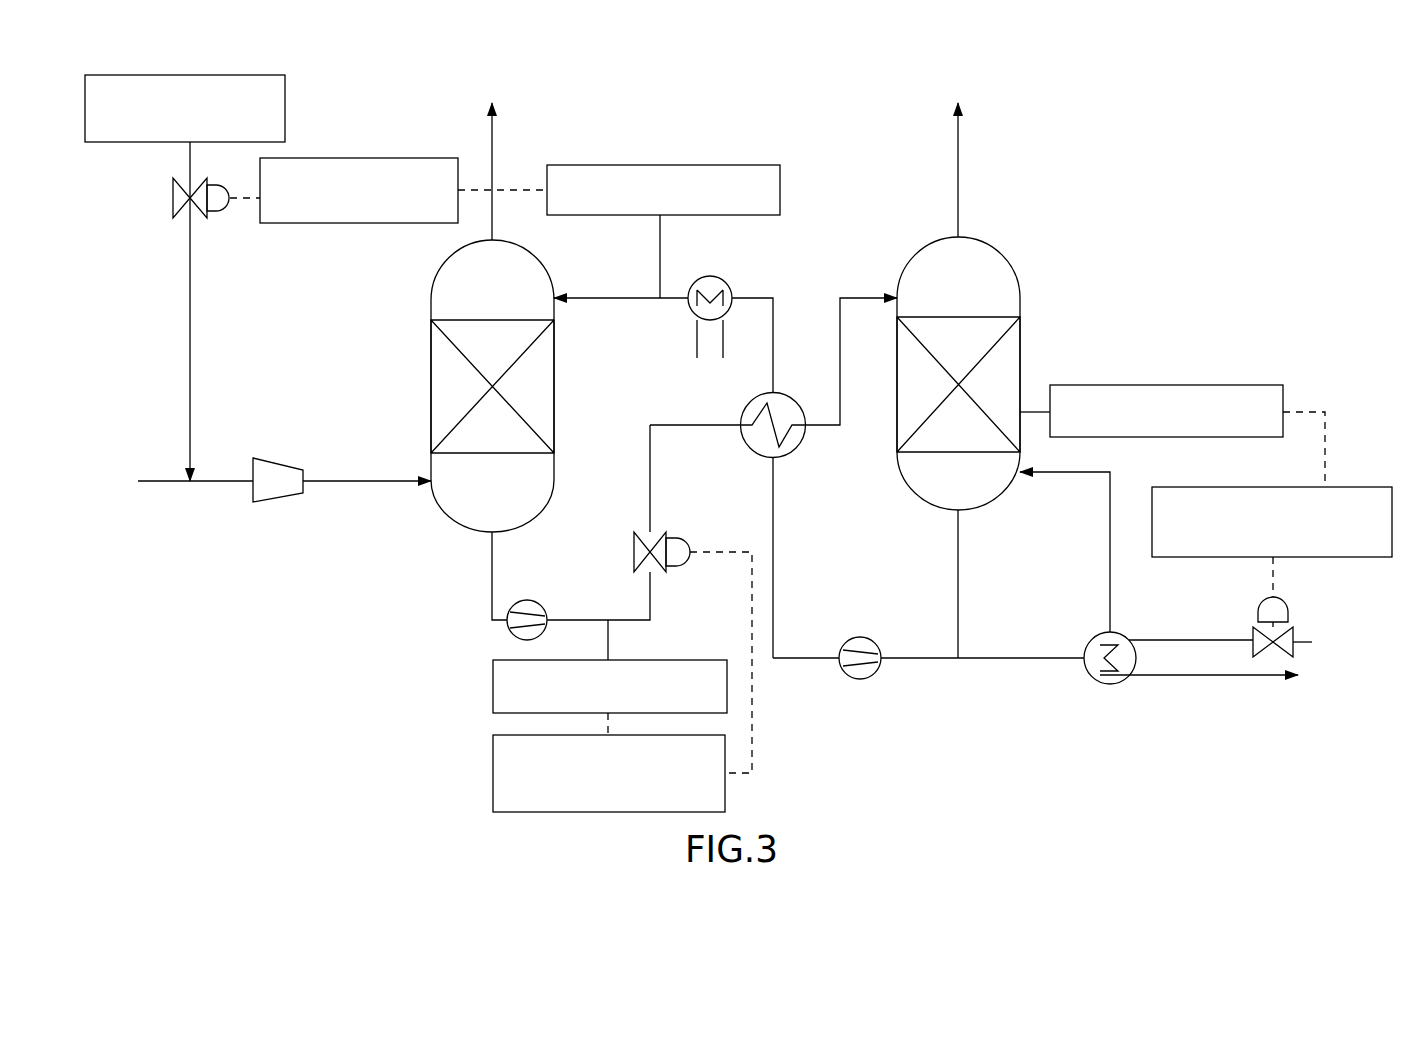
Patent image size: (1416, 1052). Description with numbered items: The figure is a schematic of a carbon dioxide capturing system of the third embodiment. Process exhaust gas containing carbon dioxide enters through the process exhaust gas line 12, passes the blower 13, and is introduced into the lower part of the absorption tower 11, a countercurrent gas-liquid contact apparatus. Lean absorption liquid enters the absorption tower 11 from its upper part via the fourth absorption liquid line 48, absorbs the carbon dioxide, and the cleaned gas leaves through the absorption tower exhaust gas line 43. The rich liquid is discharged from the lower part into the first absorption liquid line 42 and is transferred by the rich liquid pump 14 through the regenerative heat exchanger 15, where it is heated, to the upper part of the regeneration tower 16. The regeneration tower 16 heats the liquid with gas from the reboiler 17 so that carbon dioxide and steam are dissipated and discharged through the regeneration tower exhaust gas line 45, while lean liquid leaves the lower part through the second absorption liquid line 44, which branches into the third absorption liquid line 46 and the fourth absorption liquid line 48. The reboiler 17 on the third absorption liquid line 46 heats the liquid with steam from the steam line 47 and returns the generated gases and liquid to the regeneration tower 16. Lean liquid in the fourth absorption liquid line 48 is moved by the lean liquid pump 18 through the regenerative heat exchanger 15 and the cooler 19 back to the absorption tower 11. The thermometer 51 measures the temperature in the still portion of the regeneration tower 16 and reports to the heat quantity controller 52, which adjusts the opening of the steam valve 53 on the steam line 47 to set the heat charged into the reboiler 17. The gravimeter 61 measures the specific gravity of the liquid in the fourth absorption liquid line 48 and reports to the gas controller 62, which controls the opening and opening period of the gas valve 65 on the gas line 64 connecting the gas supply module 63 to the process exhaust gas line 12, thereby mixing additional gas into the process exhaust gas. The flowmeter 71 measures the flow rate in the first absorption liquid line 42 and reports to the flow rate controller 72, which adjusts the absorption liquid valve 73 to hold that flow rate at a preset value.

The absorption tower 11 is at (554, 405).
The process exhaust gas line 12 is at (170, 485).
The blower 13 is at (263, 503).
The rich liquid pump 14 is at (540, 600).
The regenerative heat exchanger 15 is at (795, 400).
The regeneration tower 16 is at (1020, 352).
The reboiler 17 is at (1108, 684).
The lean liquid pump 18 is at (858, 680).
The cooler 19 is at (728, 286).
The first absorption liquid line 42 is at (492, 583).
The absorption tower exhaust gas line 43 is at (492, 137).
The second absorption liquid line 44 is at (958, 580).
The regeneration tower exhaust gas line 45 is at (958, 198).
The third absorption liquid line 46 is at (1000, 660).
The steam line 47 is at (1155, 640).
The fourth absorption liquid line 48 is at (927, 660).
The thermometer 51 is at (1193, 385).
The heat quantity controller 52 is at (1365, 487).
The steam valve 53 is at (1288, 612).
The gravimeter 61 is at (670, 165).
The gas controller 62 is at (428, 158).
The gas supply module 63 is at (285, 98).
The gas line 64 is at (190, 337).
The gas valve 65 is at (215, 212).
The flowmeter 71 is at (493, 680).
The flow rate controller 72 is at (493, 760).
The absorption liquid valve 73 is at (672, 537).